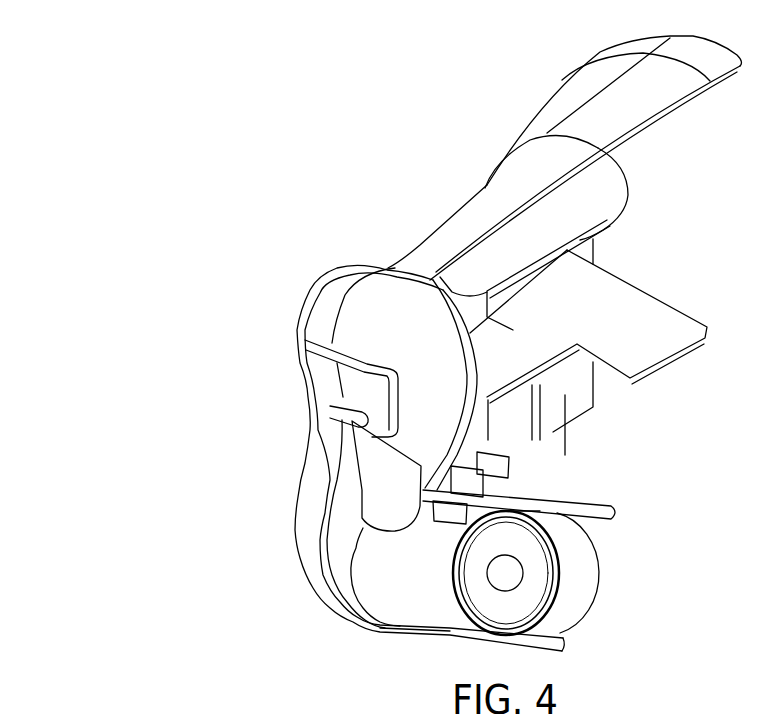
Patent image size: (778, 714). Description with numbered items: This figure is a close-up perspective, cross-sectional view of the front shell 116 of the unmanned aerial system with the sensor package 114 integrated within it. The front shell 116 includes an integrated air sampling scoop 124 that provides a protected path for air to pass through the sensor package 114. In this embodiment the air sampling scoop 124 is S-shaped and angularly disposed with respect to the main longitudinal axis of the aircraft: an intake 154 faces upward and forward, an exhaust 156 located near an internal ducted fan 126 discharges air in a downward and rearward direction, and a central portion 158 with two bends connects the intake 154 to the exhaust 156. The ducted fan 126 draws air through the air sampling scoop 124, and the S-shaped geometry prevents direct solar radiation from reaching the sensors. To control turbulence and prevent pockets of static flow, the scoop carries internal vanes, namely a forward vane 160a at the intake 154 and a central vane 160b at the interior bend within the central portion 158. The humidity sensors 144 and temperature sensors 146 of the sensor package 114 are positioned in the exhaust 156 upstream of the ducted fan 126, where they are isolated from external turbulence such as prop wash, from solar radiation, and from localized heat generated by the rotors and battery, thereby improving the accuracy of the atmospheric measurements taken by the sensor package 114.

The sensor package 114 is at (407, 82).
The front shell 116 is at (497, 163).
The air sampling scoop 124 is at (165, 350).
The ducted fan 126 is at (577, 563).
The humidity sensor 144 is at (477, 463).
The temperature sensor 146 is at (478, 456).
The intake 154 is at (318, 290).
The exhaust 156 is at (400, 592).
The central portion 158 is at (342, 452).
The forward vane 160a is at (327, 343).
The central vane 160b is at (383, 508).